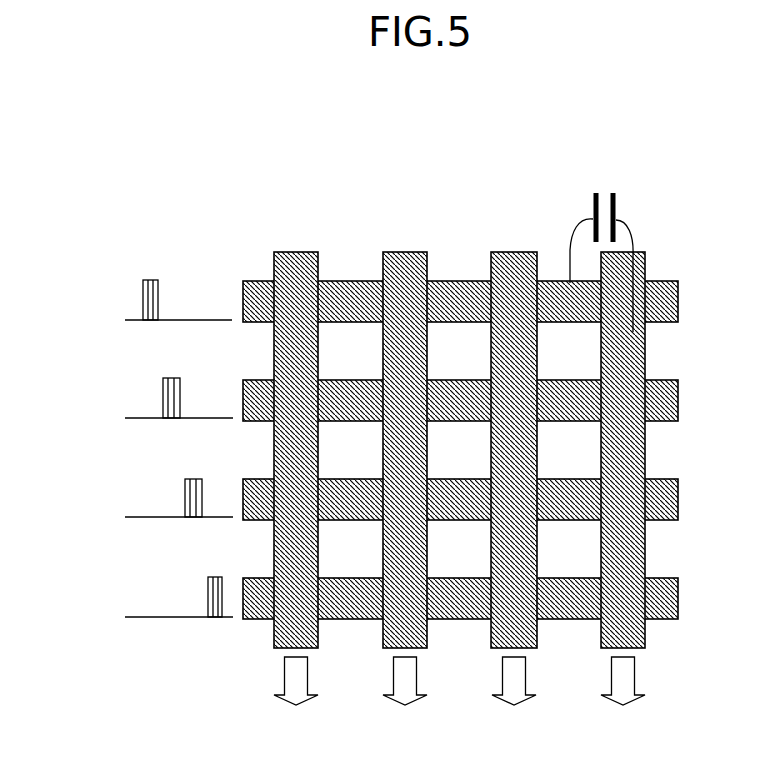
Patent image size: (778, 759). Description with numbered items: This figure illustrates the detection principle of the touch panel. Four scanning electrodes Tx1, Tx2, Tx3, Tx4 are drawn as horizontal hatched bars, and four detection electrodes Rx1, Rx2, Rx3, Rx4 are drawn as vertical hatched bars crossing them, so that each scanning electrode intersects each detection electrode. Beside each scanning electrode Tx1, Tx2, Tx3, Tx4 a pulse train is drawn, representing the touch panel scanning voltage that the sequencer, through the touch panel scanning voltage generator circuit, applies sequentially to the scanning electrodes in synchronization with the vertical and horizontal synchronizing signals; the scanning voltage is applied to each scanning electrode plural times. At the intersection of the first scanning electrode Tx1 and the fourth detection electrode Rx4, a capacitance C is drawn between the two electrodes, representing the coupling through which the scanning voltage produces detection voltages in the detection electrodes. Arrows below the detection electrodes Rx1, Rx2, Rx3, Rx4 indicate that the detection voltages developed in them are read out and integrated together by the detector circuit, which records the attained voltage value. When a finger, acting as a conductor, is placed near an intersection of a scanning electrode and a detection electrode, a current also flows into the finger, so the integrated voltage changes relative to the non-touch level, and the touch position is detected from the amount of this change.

The capacitance between transmit and receive electrodes C is at (614, 193).
The scanning electrode Tx1 is at (353, 301).
The scanning electrode Tx2 is at (353, 399).
The scanning electrode Tx3 is at (353, 497).
The scanning electrode Tx4 is at (353, 595).
The detection electrode Rx1 is at (293, 493).
The detection electrode Rx2 is at (402, 493).
The detection electrode Rx3 is at (513, 493).
The detection electrode Rx4 is at (621, 493).